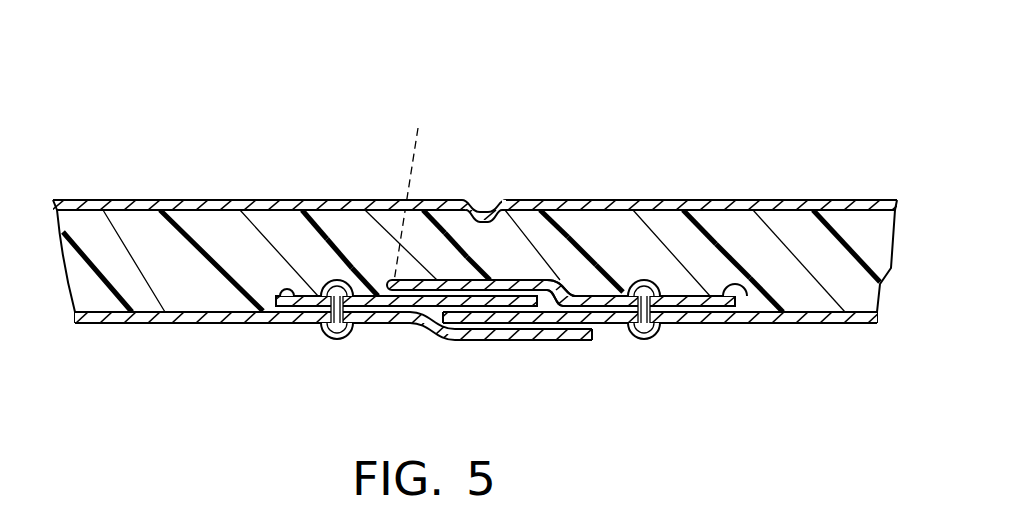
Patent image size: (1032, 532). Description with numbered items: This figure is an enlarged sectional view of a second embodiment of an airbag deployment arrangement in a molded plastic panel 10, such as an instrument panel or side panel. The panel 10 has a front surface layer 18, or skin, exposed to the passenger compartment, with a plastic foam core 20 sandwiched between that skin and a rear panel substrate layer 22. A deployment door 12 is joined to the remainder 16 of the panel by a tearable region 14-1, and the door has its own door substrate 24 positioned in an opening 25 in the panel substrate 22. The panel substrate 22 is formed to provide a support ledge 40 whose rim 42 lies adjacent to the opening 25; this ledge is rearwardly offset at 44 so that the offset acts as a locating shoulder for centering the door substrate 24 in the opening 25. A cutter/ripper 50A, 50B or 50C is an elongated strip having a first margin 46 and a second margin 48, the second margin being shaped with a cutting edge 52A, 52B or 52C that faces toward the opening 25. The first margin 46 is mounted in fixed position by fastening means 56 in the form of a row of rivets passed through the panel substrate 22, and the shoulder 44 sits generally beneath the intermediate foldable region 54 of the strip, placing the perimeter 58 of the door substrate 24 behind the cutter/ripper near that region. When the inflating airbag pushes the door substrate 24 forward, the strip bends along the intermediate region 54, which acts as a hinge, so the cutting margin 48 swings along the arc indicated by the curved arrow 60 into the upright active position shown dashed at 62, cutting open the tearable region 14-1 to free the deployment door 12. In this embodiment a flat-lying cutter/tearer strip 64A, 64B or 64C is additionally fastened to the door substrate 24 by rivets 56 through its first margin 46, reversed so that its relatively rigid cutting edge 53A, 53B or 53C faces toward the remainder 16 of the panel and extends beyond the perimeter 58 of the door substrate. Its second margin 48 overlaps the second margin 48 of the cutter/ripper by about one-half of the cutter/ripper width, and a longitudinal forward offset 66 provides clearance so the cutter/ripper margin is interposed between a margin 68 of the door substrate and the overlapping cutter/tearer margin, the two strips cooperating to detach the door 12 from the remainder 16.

The panel 10 is at (868, 135).
The deployment door 12 is at (807, 192).
The tearable region 14-1 is at (485, 195).
The remainder of the panel 16 is at (150, 186).
The front surface layer 18 is at (91, 199).
The core 20 is at (64, 234).
The panel substrate layer 22 is at (196, 328).
The door substrate 24 is at (848, 325).
The opening 25 is at (812, 350).
The support ledge 40 is at (560, 342).
The rim 42 is at (598, 340).
The rearward offset 44 is at (400, 333).
The first margin 46 is at (265, 322).
The second margin 48 is at (490, 342).
The cutter/ripper 50A is at (314, 200).
The cutter/ripper 50B is at (339, 253).
The cutter/ripper 50C is at (365, 282).
The cutting edge 52A is at (583, 237).
The cutting edge 52B is at (582, 251).
The cutting edge 52C is at (609, 278).
The cutting edge 53A is at (432, 236).
The cutting edge 53B is at (456, 245).
The cutting edge 53C is at (478, 268).
The intermediate foldable region 54 is at (378, 270).
The fastening means 56 is at (340, 340).
The perimeter of the door substrate 58 is at (432, 340).
The curved arrow 60 is at (546, 279).
The upright active position 62 is at (405, 180).
The cutter/tearer strip 64A is at (690, 212).
The cutter/tearer strip 64B is at (733, 261).
The cutter/tearer strip 64C is at (766, 295).
The forward offset 66 is at (578, 296).
The margin of the door substrate 68 is at (521, 342).